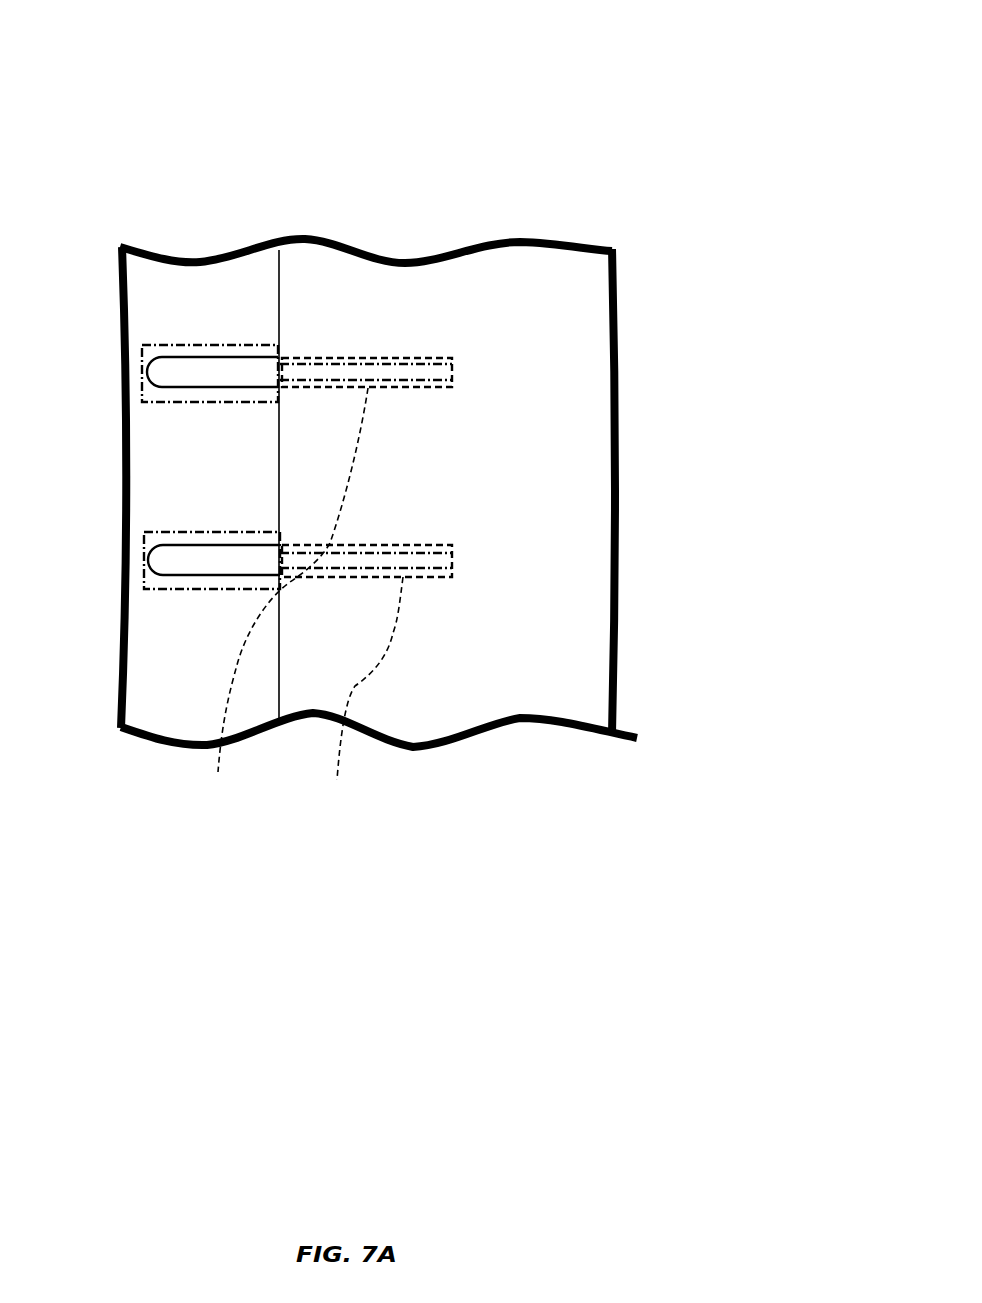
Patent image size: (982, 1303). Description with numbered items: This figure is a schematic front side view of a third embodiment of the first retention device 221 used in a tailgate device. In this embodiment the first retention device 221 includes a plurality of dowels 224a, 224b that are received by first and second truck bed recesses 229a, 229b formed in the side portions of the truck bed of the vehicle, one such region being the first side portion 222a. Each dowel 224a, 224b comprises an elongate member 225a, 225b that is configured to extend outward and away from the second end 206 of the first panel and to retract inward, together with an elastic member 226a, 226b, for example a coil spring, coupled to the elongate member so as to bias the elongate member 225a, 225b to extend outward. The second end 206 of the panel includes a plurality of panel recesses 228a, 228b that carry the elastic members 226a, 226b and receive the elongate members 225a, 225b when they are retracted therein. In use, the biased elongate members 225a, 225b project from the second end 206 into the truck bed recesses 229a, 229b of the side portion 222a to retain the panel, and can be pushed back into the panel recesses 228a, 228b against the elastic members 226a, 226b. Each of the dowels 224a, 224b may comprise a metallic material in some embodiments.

The first retention device 221 is at (598, 150).
The second end of the first panel 206 is at (601, 252).
The first side portion of the truck bed 222a is at (167, 293).
The first truck bed recess 229a is at (211, 345).
The second truck bed recess 229b is at (185, 590).
The elongate member 225a is at (150, 378).
The elongate member 225b is at (157, 557).
The dowel 224a is at (310, 332).
The dowel 224b is at (463, 521).
The elastic member 226a is at (388, 357).
The elastic member 226b is at (458, 562).
The panel recess 228a is at (283, 596).
The panel recess 228b is at (360, 694).